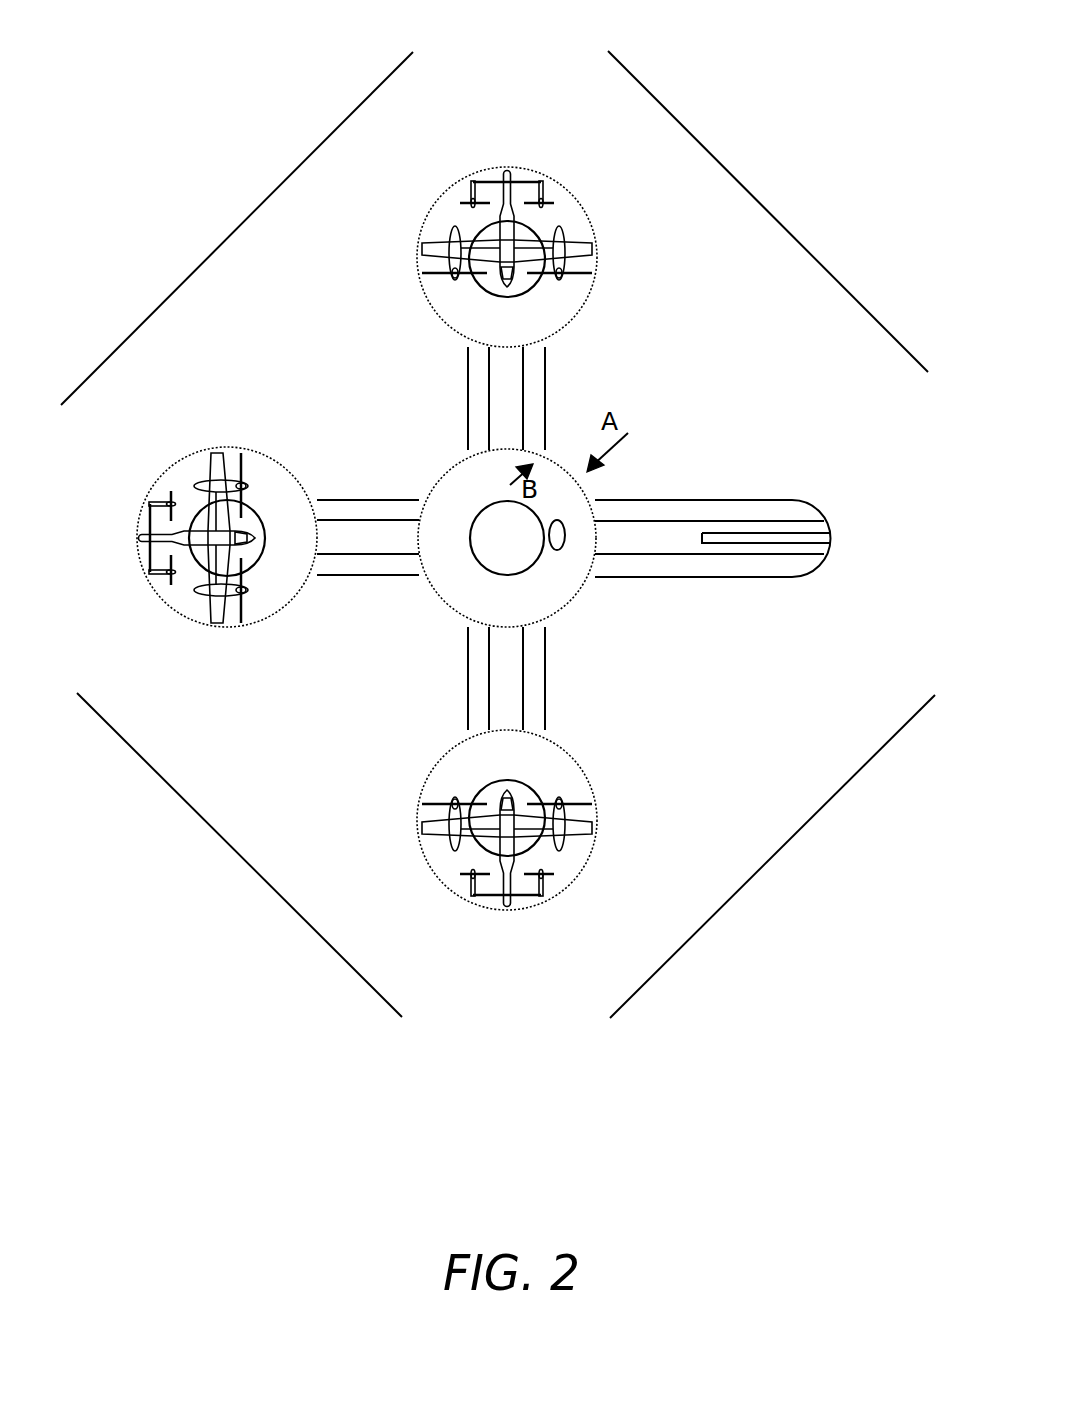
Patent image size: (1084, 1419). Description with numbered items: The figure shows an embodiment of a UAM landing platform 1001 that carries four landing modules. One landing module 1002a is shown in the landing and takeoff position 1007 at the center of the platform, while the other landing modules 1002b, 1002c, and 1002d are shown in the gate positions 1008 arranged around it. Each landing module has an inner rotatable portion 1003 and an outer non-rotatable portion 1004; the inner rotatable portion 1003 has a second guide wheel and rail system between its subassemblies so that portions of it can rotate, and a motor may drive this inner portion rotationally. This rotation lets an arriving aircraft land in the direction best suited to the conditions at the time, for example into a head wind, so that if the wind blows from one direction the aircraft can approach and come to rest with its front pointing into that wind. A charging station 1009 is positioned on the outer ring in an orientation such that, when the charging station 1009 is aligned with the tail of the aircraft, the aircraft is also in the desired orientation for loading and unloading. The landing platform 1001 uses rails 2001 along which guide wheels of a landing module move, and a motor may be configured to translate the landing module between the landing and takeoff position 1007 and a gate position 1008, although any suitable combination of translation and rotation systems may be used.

The UAM landing platform 1001 is at (683, 123).
The landing module 1002a is at (504, 168).
The landing module 1002b is at (437, 481).
The landing module 1002c is at (434, 771).
The landing module 1002d is at (229, 448).
The inner rotatable portion 1003 is at (472, 560).
The outer non-rotatable portion 1004 is at (580, 476).
The landing and takeoff position 1007 is at (555, 615).
The gate position 1008 is at (780, 642).
The charging station 1009 is at (556, 548).
The rails 2001 is at (690, 555).